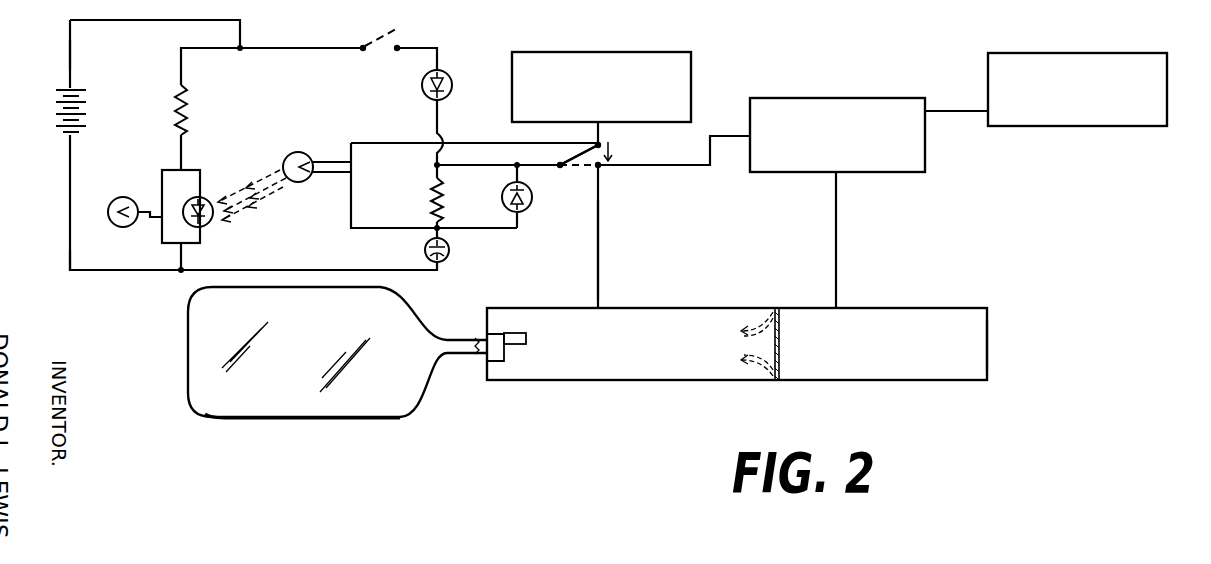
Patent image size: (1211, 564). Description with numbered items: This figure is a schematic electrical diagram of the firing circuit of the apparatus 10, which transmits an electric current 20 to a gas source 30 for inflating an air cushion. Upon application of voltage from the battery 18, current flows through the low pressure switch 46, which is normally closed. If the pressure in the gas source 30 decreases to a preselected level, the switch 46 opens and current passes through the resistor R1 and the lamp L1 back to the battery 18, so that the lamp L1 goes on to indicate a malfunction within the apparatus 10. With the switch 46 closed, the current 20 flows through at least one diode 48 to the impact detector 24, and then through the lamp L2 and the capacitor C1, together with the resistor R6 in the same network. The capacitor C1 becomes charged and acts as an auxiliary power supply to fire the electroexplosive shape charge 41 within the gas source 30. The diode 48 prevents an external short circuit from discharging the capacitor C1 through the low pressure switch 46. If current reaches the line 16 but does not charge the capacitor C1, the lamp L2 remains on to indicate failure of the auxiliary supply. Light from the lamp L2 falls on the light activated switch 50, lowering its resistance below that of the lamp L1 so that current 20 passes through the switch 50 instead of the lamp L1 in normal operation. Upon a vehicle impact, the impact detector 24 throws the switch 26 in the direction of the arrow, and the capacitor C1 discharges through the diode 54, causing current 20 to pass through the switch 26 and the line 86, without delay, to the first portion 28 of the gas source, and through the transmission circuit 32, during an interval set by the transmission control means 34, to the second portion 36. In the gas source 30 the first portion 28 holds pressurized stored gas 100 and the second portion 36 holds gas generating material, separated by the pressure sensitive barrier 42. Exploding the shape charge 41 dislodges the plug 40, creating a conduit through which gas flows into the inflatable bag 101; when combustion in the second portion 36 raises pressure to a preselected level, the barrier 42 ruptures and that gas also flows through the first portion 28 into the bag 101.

The electrical apparatus 10 is at (122, 301).
The line 16 is at (440, 270).
The battery 18 is at (53, 124).
The electrical current 20 is at (68, 56).
The impact detector 24 is at (691, 60).
The switch 26 is at (583, 171).
The first portion of gas source 28 is at (690, 308).
The gas source 30 is at (477, 421).
The transmission circuit 32 is at (858, 97).
The transmission control means 34 is at (988, 68).
The second portion of gas source 36 is at (988, 318).
The plug 40 is at (492, 356).
The shape charge 41 is at (518, 334).
The pressure sensitive barrier 42 is at (780, 353).
The low pressure switch 46 is at (376, 38).
The diode 48 is at (422, 88).
The light activated switch 50 is at (208, 222).
The diode 54 is at (502, 213).
The line 86 is at (597, 248).
The stored gas 100 is at (702, 353).
The inflatable bag 101 is at (254, 418).
The resistor R1 is at (190, 112).
The resistor R6 is at (432, 196).
The lamp L1 is at (114, 201).
The lamp L2 is at (288, 157).
The capacitor C1 is at (426, 246).